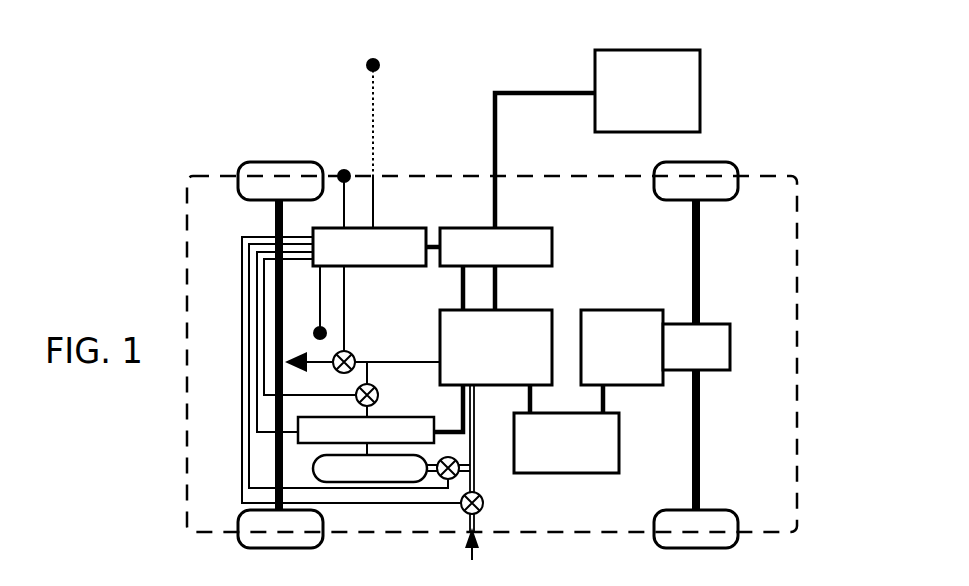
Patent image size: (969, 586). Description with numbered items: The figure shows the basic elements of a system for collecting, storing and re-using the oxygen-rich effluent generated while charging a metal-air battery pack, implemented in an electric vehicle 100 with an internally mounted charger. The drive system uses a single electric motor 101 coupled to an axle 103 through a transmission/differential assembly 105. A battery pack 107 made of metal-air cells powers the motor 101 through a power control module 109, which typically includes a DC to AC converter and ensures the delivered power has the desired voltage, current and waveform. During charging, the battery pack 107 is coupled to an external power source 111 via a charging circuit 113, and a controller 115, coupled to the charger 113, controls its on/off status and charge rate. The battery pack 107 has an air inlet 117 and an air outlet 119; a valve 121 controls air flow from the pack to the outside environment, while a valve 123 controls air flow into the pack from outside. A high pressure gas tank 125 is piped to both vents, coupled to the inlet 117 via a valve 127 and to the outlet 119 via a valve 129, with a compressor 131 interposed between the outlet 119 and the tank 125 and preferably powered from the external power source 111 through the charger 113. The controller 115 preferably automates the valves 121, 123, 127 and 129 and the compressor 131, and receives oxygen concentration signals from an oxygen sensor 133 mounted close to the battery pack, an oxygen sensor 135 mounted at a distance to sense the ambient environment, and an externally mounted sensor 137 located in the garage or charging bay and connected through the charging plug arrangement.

The electric vehicle 100 is at (805, 220).
The electric motor 101 is at (642, 310).
The axle 103 is at (700, 437).
The transmission/differential assembly 105 is at (730, 347).
The battery pack 107 is at (523, 310).
The power control module 109 is at (572, 473).
The external power source 111 is at (702, 92).
The charging circuit 113 is at (538, 228).
The controller 115 is at (380, 228).
The air inlet 117 is at (477, 392).
The air outlet 119 is at (431, 351).
The valve 121 is at (352, 353).
The valve 123 is at (483, 506).
The high pressure gas tank 125 is at (410, 481).
The valve 127 is at (477, 463).
The valve 129 is at (392, 388).
The compressor 131 is at (388, 417).
The oxygen sensor 133 is at (313, 333).
The oxygen sensor 135 is at (344, 168).
The externally mounted sensor 137 is at (373, 57).